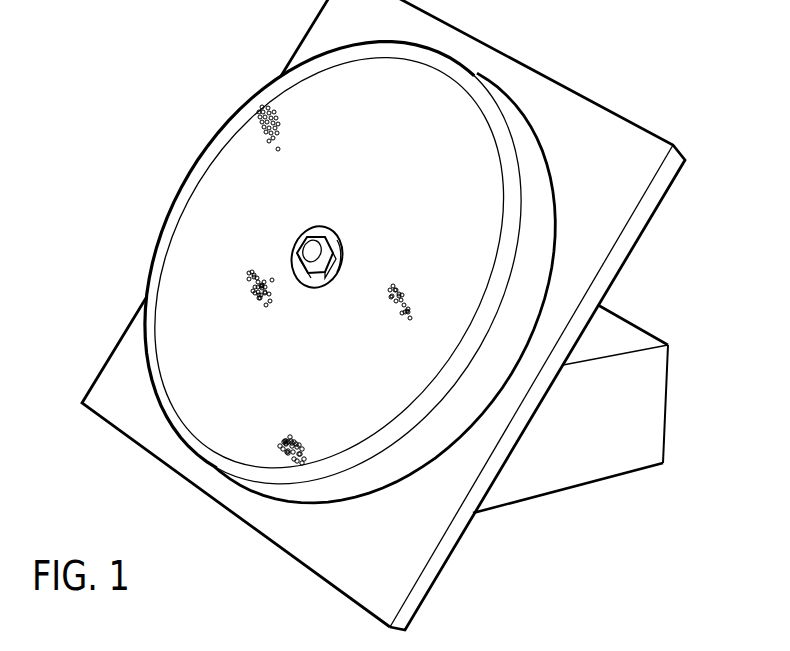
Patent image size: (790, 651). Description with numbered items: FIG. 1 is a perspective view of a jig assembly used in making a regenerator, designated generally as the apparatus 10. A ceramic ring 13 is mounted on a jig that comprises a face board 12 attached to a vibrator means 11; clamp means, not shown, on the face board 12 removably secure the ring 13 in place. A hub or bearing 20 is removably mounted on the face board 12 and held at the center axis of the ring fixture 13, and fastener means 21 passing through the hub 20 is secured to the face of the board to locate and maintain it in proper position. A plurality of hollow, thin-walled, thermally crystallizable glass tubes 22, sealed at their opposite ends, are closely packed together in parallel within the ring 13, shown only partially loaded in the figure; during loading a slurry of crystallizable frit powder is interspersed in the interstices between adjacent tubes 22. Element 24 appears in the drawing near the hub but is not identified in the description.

The apparatus 10 is at (590, 390).
The vibrator means 11 is at (610, 437).
The face board 12 is at (607, 101).
The ceramic ring 13 is at (536, 190).
The hub 20 is at (337, 240).
The fastener means 21 is at (308, 247).
The glass tubes 22 is at (280, 112).
The washer 24 is at (342, 272).